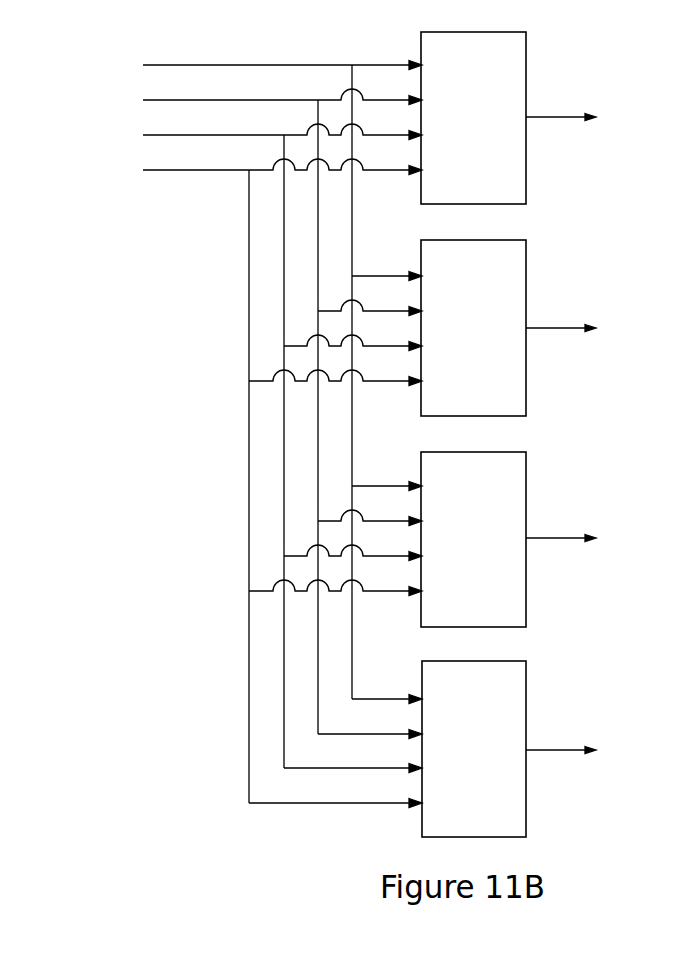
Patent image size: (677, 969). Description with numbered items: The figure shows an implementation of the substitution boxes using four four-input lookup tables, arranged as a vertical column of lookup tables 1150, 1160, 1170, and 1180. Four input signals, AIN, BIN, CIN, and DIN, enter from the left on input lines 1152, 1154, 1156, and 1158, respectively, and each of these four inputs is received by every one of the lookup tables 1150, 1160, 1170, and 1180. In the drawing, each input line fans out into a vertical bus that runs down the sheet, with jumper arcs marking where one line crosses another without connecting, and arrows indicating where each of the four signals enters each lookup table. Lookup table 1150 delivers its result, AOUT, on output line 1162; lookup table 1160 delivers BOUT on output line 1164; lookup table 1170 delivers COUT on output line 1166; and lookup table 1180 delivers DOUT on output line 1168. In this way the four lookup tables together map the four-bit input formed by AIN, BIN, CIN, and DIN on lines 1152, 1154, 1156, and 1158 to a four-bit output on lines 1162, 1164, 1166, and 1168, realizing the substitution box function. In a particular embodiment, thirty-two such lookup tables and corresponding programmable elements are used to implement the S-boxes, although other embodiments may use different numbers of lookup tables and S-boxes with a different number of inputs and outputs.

The lookup table 1150 is at (473, 118).
The AIN input signal line 1152 is at (238, 380).
The BIN input signal line 1154 is at (238, 414).
The CIN input signal line 1156 is at (238, 448).
The DIN input signal line 1158 is at (238, 483).
The lookup table 1160 is at (473, 328).
The output line 1162 is at (594, 115).
The output line 1164 is at (595, 313).
The output line 1166 is at (595, 522).
The output line 1168 is at (595, 732).
The lookup table 1170 is at (473, 539).
The lookup table 1180 is at (474, 749).